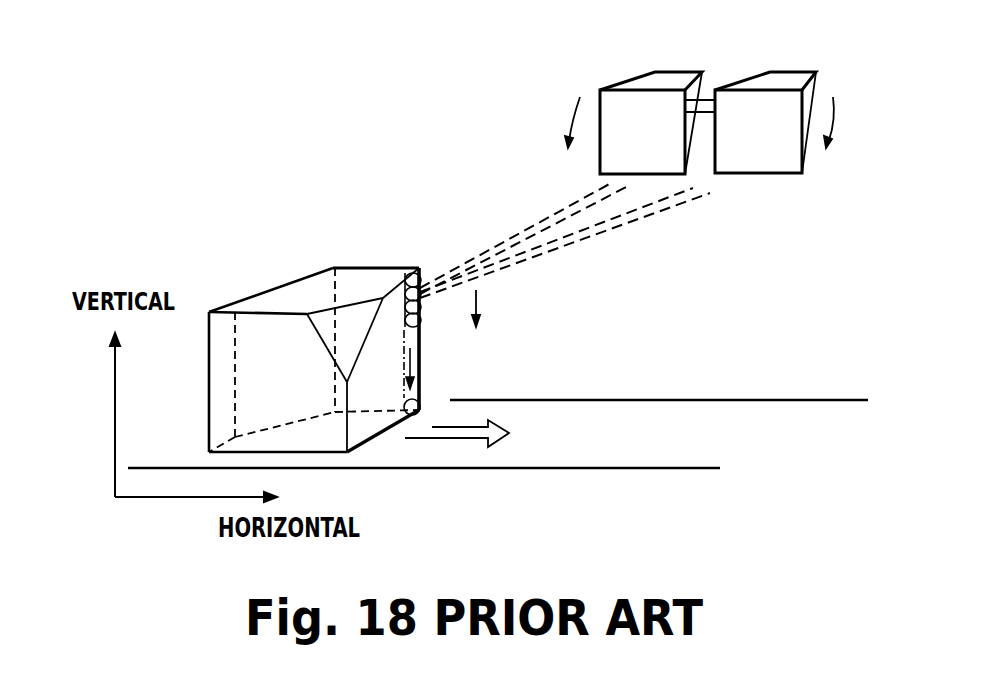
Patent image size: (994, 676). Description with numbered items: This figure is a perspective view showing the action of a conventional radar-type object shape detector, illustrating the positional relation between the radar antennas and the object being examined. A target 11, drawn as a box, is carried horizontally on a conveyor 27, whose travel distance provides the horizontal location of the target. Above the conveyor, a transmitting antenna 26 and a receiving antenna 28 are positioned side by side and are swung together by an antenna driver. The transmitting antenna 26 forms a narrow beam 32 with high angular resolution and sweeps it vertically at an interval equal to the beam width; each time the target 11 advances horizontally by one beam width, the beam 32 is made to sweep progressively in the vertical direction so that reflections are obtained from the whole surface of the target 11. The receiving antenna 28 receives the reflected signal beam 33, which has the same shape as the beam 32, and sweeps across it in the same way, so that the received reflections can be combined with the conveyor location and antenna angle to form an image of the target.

The target 11 is at (210, 363).
The transmitting antenna 26 is at (618, 85).
The conveyor 27 is at (685, 398).
The receiving antenna 28 is at (817, 73).
The beam 32 is at (513, 238).
The reflected signal beam 33 is at (620, 226).